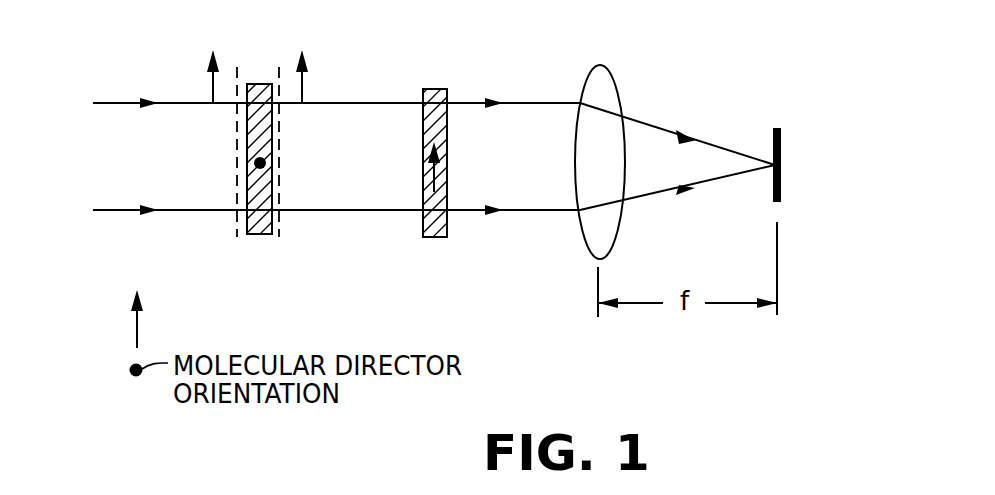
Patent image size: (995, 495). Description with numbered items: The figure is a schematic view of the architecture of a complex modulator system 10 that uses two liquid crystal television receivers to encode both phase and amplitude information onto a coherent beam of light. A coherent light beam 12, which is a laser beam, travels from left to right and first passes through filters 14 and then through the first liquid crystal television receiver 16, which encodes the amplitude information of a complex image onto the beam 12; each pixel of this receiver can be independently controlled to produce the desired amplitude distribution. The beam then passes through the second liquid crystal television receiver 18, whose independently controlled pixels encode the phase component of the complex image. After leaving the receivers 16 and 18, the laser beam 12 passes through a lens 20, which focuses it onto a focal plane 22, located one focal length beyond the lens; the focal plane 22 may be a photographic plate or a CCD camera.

The optical system 10 is at (100, 240).
The coherent light beam 12 is at (137, 100).
The filters 14 is at (280, 67).
The first liquid crystal television receiver 16 is at (253, 235).
The second liquid crystal television receiver 18 is at (440, 88).
The lens 20 is at (602, 63).
The focal plane 22 is at (781, 152).